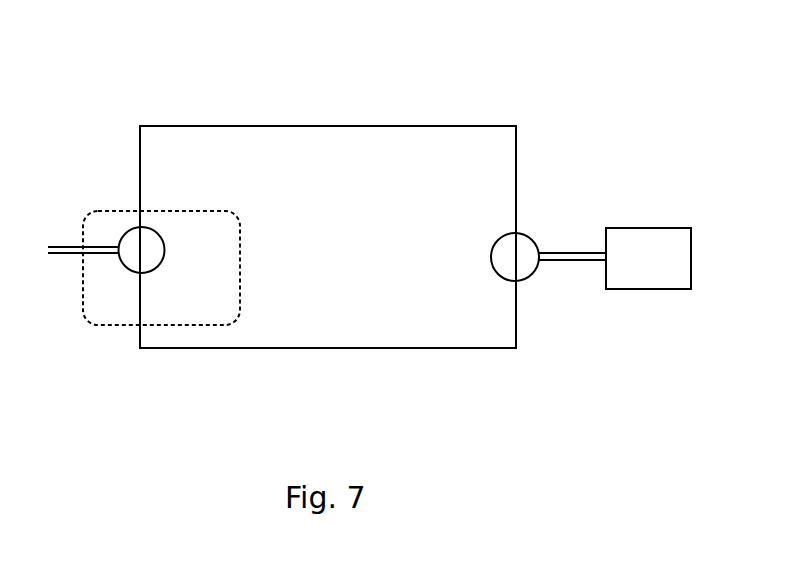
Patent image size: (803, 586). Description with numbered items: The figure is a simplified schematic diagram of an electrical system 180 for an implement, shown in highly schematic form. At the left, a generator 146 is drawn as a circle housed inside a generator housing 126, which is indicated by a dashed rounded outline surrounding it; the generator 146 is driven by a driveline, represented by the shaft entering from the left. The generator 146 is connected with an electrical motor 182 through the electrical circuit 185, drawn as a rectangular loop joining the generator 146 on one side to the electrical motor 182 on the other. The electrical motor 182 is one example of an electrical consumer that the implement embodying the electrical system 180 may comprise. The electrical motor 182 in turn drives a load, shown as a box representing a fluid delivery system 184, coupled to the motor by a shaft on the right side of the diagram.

The electrical system 180 is at (517, 89).
The electrical circuit 185 is at (293, 126).
The generator housing 126 is at (102, 328).
The generator 146 is at (125, 228).
The electrical motor 182 is at (528, 234).
The fluid delivery system 184 is at (648, 289).